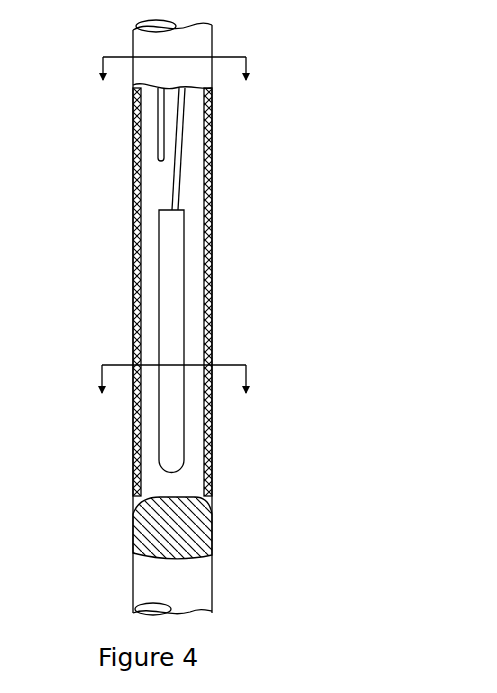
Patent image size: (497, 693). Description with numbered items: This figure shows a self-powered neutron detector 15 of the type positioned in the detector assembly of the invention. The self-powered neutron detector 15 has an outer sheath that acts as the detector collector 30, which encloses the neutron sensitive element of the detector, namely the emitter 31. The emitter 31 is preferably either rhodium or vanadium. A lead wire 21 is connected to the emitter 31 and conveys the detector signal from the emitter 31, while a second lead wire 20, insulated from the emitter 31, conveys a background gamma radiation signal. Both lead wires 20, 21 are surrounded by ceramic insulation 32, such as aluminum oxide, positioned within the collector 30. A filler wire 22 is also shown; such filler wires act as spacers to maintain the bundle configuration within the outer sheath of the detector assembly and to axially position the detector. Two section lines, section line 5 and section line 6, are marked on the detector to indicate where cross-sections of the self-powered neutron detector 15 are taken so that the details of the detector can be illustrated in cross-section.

The self-powered neutron detector 15 is at (287, 178).
The lead wire 20 is at (153, 134).
The lead wire 21 is at (178, 200).
The filler wire 22 is at (211, 530).
The collector 30 is at (213, 262).
The emitter 31 is at (172, 420).
The ceramic insulation 32 is at (152, 184).
The section line 5- 5 is at (174, 80).
The section line 6- 6 is at (173, 390).